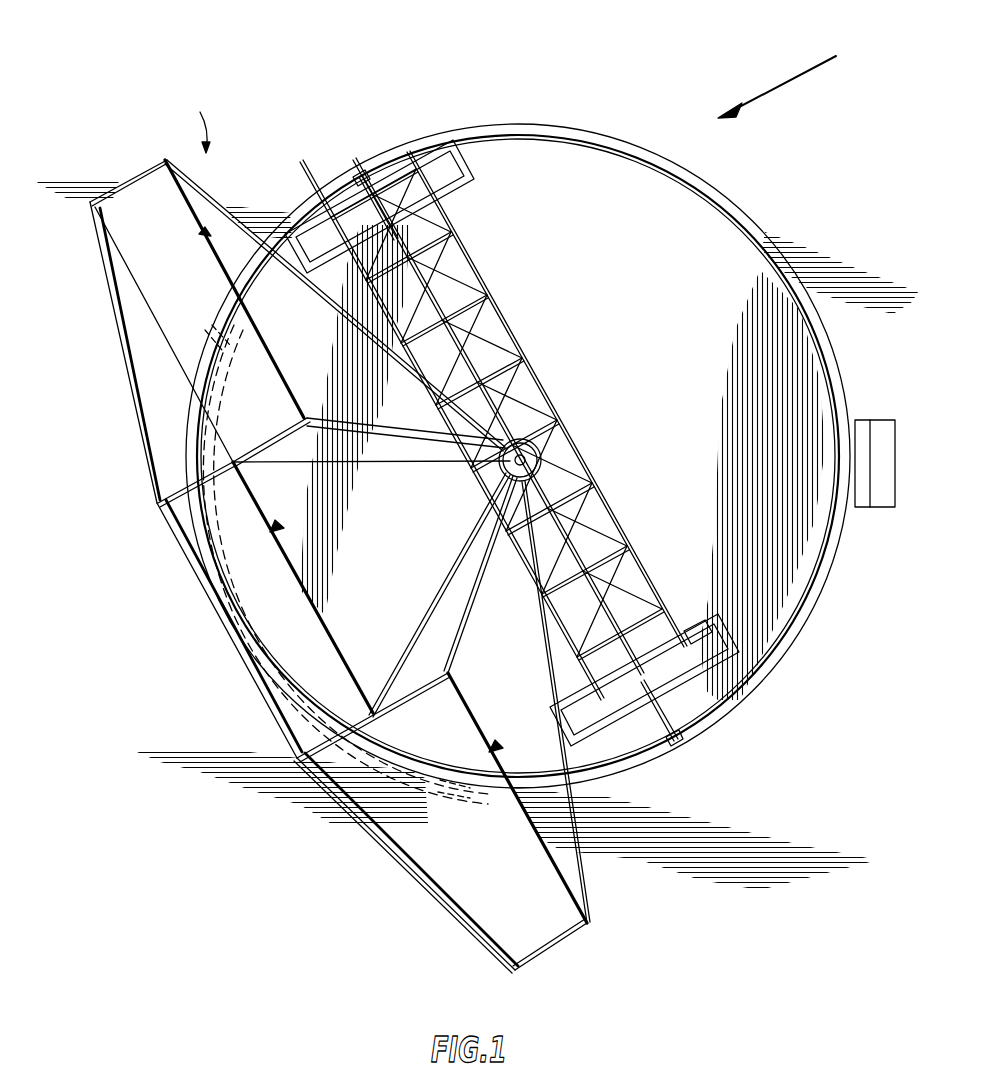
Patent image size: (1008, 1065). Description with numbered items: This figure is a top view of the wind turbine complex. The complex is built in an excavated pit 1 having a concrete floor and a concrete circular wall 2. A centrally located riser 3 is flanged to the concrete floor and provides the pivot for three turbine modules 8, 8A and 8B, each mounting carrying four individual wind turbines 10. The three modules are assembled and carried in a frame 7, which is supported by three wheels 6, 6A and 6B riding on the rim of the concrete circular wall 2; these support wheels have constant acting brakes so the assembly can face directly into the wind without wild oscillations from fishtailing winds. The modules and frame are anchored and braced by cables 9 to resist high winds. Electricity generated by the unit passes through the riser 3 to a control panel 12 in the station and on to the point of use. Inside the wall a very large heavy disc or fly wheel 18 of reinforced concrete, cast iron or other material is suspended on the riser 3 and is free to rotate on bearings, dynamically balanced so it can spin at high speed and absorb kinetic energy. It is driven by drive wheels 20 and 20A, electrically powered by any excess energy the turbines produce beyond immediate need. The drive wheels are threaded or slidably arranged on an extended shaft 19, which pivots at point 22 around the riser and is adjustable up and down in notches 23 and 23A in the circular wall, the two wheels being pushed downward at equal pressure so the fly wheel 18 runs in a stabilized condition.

The excavated pit 1 is at (503, 124).
The concrete circular wall 2 is at (578, 128).
The riser 3 is at (498, 467).
The wheel 6 is at (243, 612).
The wheel 6A is at (462, 780).
The wheel 6B is at (210, 340).
The frame 7 is at (128, 398).
The turbine module 8 is at (250, 522).
The turbine module 8A is at (553, 912).
The turbine module 8B is at (142, 195).
The cables 9 is at (320, 292).
The wind turbine 10 is at (283, 358).
The control panel 12 is at (866, 420).
The fly wheel 18 is at (606, 354).
The extended shaft 19 is at (615, 623).
The drive wheel 20 is at (745, 688).
The drive wheel 20A is at (462, 166).
The pivot point 22 is at (493, 425).
The notch 23 is at (682, 746).
The notch 23A is at (363, 170).